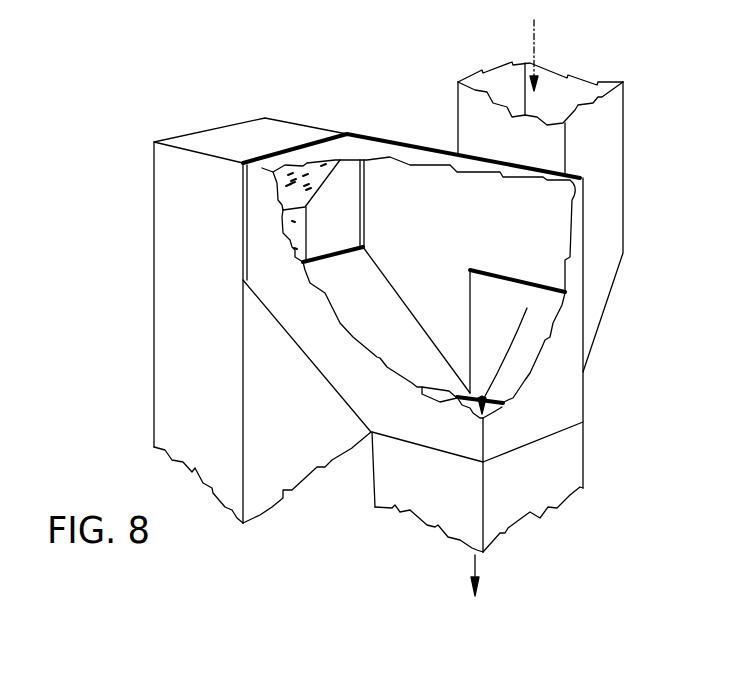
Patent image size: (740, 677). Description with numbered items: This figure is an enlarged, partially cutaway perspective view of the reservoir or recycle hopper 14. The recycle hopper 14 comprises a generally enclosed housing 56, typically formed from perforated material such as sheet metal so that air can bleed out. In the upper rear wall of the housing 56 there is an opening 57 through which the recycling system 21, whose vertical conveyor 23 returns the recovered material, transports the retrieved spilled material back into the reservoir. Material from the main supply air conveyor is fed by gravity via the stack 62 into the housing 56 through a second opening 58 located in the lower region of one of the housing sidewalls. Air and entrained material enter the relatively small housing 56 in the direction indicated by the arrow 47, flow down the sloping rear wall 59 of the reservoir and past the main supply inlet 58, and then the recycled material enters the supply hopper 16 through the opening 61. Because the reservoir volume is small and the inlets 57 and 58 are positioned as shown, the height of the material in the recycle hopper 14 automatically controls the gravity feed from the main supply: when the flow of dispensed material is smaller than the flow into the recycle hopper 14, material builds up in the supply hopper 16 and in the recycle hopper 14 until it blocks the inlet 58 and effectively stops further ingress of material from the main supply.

The reservoir or recycle hopper 14 is at (374, 133).
The supply hopper 16 is at (583, 447).
The recycling system 21 is at (153, 200).
The vertical conveyor 23 is at (155, 383).
The arrow 47 is at (336, 246).
The housing 56 is at (417, 152).
The opening 57 is at (360, 211).
The second opening 58 is at (475, 285).
The sloping rear wall 59 is at (368, 342).
The opening 61 is at (445, 390).
The stack 62 is at (624, 140).